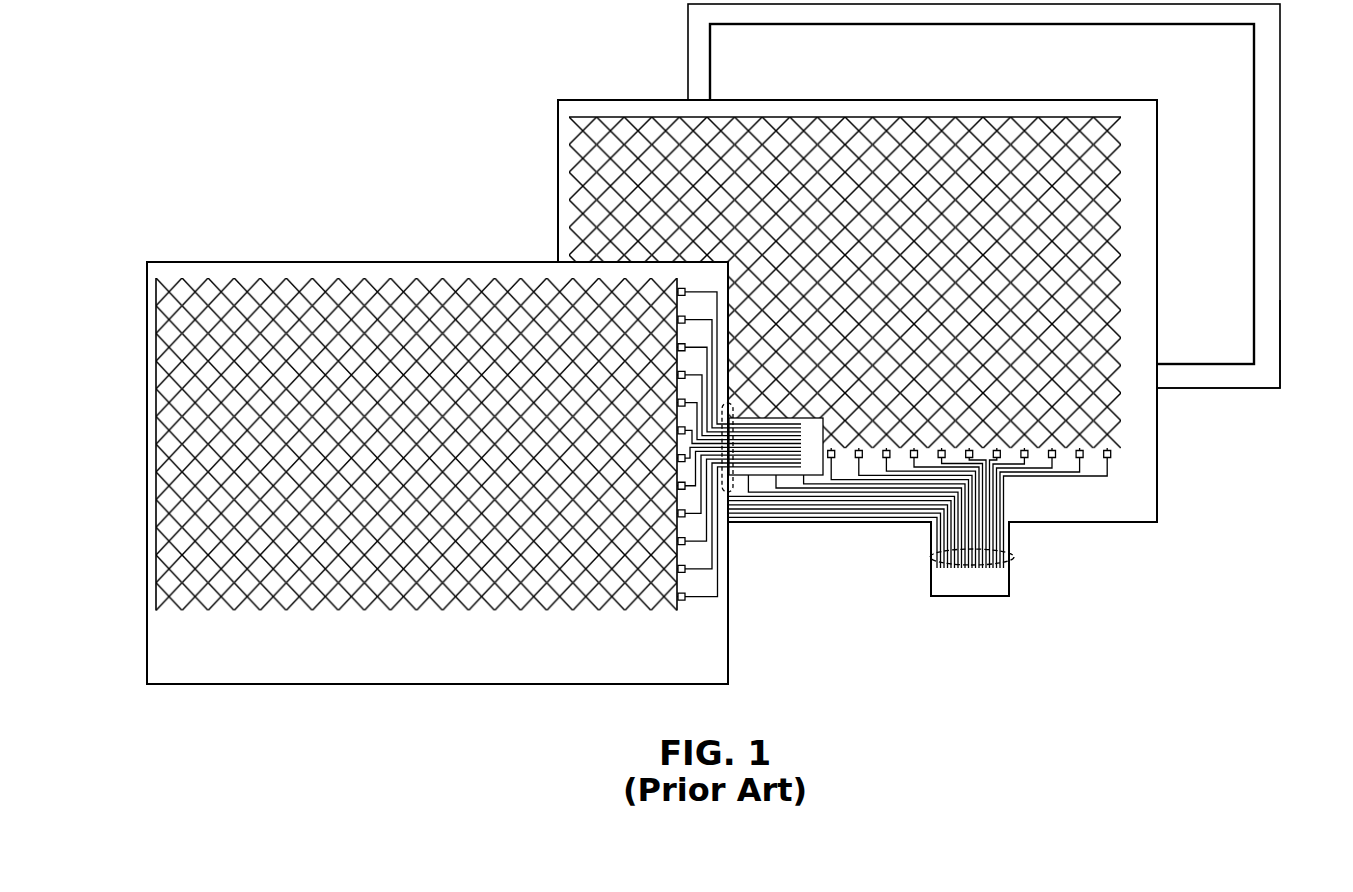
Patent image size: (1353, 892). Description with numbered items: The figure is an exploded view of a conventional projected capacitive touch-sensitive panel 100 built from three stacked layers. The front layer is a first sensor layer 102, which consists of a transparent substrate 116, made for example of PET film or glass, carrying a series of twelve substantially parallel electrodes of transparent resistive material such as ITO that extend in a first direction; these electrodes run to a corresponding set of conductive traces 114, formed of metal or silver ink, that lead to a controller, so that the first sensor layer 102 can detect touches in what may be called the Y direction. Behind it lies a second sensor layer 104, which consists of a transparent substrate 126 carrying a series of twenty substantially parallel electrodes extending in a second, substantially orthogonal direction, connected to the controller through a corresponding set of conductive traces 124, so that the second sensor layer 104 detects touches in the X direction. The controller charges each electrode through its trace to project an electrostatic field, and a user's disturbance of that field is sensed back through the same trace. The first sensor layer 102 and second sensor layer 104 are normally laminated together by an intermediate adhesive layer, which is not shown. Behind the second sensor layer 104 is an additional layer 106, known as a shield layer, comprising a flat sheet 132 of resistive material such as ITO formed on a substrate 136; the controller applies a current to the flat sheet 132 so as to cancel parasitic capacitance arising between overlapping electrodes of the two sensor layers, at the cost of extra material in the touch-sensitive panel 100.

The touch-sensitive panel 100 is at (298, 107).
The first sensor layer 102 is at (386, 684).
The second sensor layer 104 is at (867, 523).
The shield layer 106 is at (1222, 388).
The conductive traces 114 is at (732, 500).
The transparent substrate 116 is at (728, 665).
The conductive traces 124 is at (1013, 557).
The transparent substrate 126 is at (1138, 492).
The flat sheet 132 is at (1175, 350).
The substrate 136 is at (1262, 378).